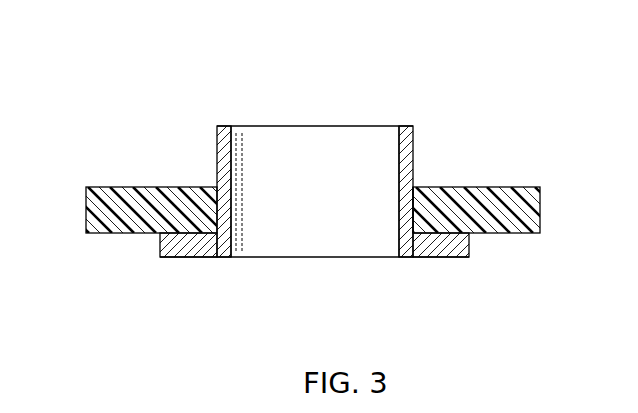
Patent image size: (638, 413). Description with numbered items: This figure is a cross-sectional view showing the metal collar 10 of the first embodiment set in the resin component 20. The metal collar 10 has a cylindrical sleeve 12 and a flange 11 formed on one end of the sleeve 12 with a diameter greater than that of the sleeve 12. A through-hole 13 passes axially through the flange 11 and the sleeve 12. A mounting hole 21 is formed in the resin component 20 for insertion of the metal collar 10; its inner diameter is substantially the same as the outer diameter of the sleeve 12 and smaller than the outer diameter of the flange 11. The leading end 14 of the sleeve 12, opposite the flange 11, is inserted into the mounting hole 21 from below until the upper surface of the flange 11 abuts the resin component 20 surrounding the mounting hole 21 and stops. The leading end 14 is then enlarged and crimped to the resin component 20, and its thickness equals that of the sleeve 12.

The metal collar 10 is at (313, 187).
The flange 11 is at (446, 257).
The cylindrical sleeve 12 is at (313, 191).
The through-hole 13 is at (398, 220).
The leading end 14 is at (413, 140).
The resin component 20 is at (518, 233).
The mounting hole 21 is at (412, 202).